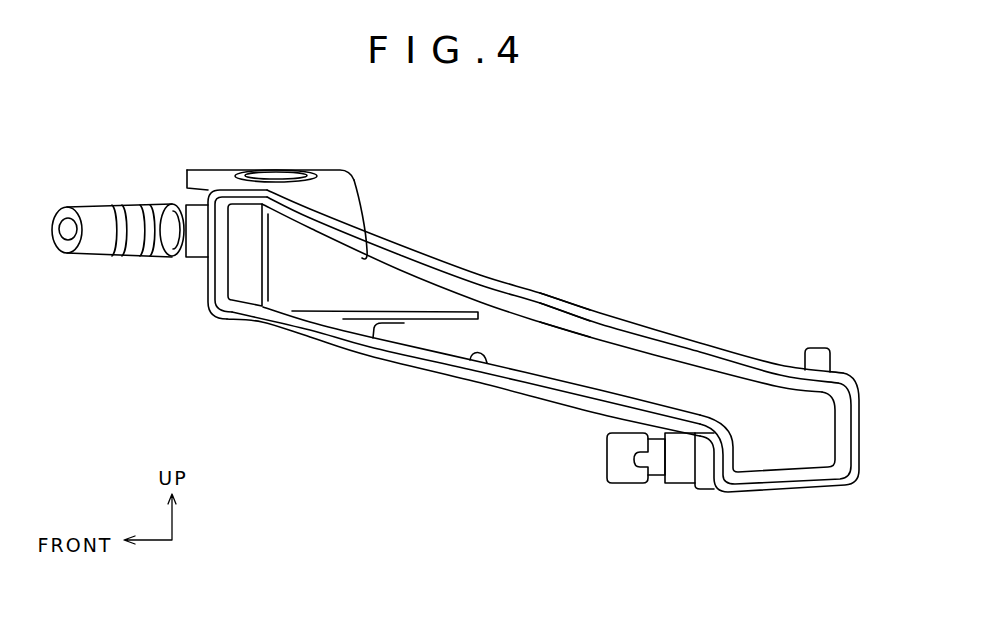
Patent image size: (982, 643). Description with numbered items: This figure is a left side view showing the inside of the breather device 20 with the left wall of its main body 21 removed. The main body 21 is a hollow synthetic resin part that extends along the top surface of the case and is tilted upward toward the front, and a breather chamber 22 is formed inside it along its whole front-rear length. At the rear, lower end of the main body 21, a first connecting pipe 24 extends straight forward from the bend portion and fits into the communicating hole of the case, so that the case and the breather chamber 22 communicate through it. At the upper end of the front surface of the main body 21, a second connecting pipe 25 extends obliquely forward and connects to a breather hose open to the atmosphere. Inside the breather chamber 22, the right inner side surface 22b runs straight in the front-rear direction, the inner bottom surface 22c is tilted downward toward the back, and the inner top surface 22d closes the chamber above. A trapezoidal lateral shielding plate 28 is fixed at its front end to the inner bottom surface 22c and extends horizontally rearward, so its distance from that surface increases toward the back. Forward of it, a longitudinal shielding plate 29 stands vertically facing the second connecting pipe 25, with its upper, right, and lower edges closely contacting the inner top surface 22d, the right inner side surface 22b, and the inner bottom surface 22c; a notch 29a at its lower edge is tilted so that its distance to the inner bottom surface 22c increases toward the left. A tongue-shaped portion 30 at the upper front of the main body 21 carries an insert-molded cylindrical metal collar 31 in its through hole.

The breather device 20 is at (595, 151).
The main body 21 is at (488, 280).
The breather chamber 22 is at (627, 357).
The right inner side surface 22b is at (563, 342).
The inner bottom surface 22c is at (482, 364).
The inner top surface 22d is at (370, 258).
The first connecting pipe 24 is at (632, 484).
The second connecting pipe 25 is at (117, 204).
The lateral shielding plate 28 is at (404, 323).
The longitudinal shielding plate 29 is at (262, 268).
The notch 29a is at (270, 296).
The tongue-shaped portion 30 is at (335, 170).
The cylindrical metal collar 31 is at (245, 170).